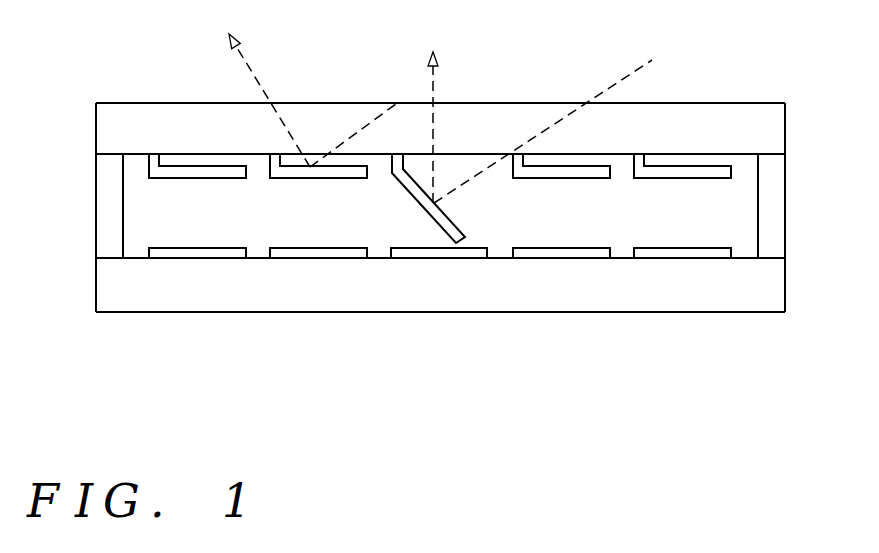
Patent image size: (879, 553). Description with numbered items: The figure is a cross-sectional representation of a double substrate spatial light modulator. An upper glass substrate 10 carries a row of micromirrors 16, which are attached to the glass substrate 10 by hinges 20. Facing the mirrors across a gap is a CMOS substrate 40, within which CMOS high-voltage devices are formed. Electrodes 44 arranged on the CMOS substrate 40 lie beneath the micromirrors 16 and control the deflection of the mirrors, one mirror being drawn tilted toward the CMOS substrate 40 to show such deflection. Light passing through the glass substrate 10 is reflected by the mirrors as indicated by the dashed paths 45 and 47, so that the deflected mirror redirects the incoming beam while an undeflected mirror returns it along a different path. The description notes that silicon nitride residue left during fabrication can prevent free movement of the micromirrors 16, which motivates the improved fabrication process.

The glass substrate 10 is at (768, 120).
The micromirrors 16 is at (720, 172).
The hinges 20 is at (147, 167).
The CMOS substrate 40 is at (747, 287).
The electrodes 44 is at (682, 253).
The reflected light 45 is at (617, 82).
The reflected light 47 is at (415, 92).